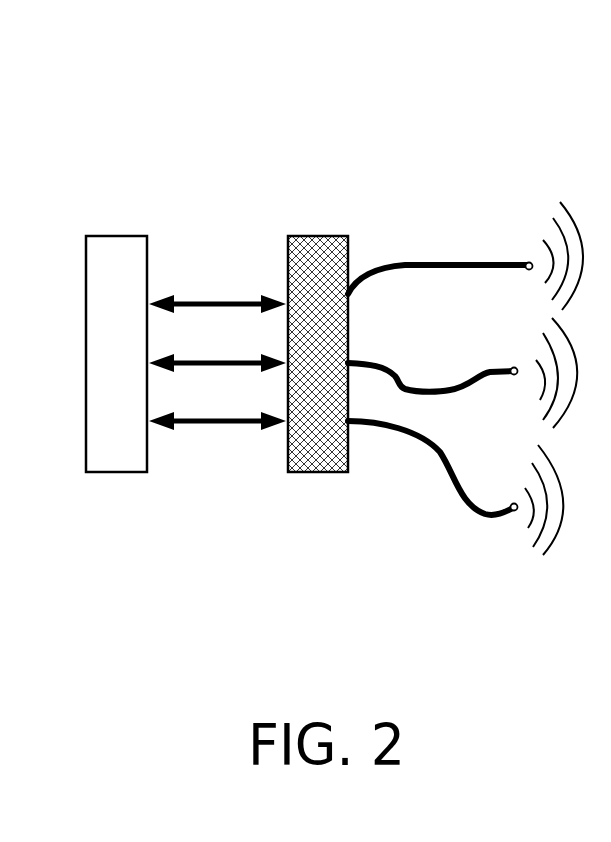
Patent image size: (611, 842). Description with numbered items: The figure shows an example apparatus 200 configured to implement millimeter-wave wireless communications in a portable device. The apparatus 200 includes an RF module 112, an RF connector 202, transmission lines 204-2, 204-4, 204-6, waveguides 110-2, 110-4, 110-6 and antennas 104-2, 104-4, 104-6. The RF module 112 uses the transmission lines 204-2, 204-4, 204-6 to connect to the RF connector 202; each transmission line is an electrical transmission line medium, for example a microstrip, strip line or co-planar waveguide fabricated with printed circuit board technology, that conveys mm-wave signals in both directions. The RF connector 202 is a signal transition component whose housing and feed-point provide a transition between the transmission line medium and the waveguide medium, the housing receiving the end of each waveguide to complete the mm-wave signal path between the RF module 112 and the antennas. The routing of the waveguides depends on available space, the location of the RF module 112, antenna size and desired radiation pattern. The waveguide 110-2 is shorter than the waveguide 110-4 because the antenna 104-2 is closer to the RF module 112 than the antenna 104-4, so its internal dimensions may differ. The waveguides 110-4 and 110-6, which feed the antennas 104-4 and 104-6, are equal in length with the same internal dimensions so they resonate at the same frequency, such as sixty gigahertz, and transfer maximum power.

The apparatus 200 is at (207, 58).
The RF module 112 is at (117, 236).
The RF connector 202 is at (318, 236).
The transmission line 204-2 is at (252, 300).
The transmission line 204-4 is at (250, 359).
The transmission line 204-6 is at (250, 417).
The waveguide 110-2 is at (472, 268).
The waveguide 110-4 is at (484, 379).
The waveguide 110-6 is at (473, 513).
The antenna 104-2 is at (527, 262).
The antenna 104-4 is at (512, 368).
The antenna 104-6 is at (515, 503).